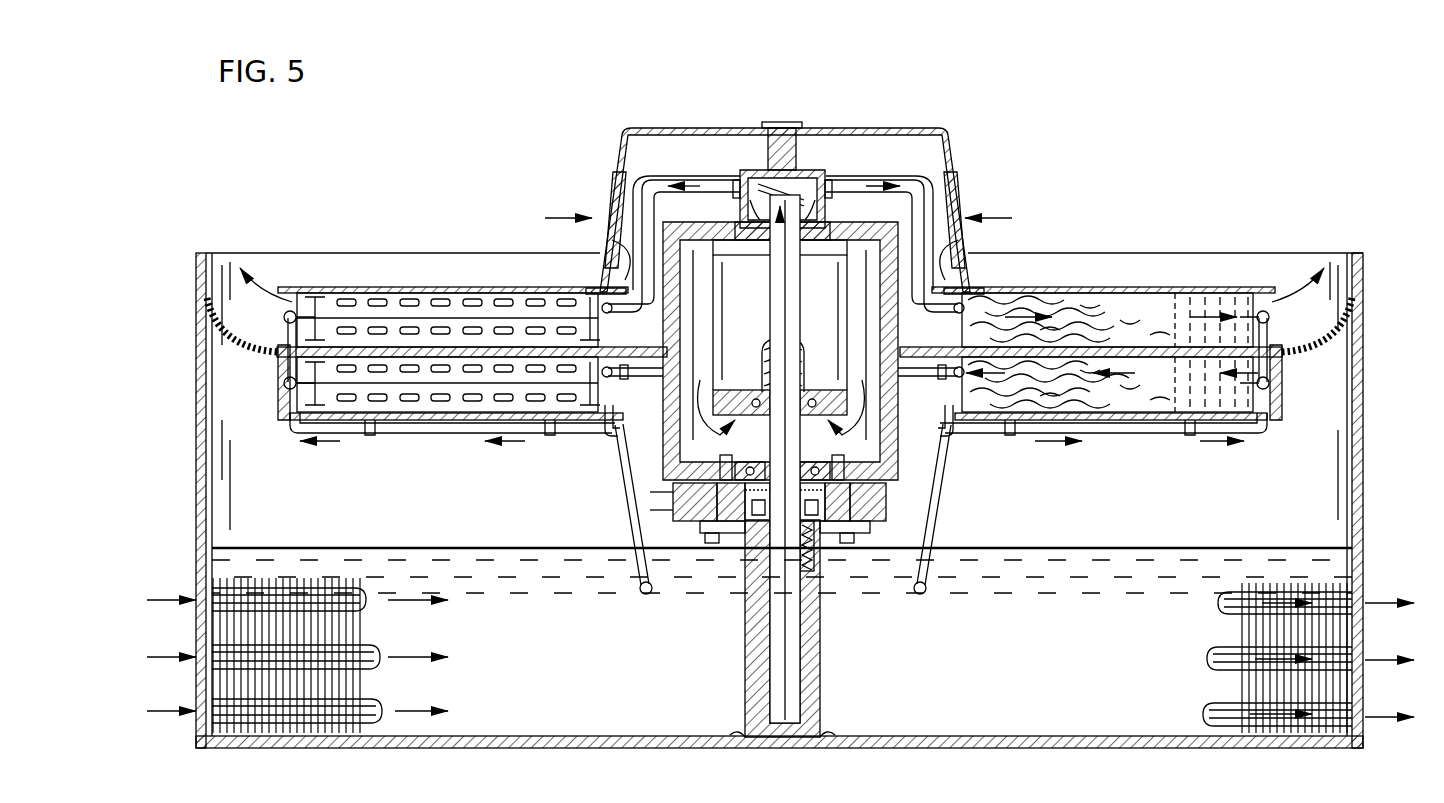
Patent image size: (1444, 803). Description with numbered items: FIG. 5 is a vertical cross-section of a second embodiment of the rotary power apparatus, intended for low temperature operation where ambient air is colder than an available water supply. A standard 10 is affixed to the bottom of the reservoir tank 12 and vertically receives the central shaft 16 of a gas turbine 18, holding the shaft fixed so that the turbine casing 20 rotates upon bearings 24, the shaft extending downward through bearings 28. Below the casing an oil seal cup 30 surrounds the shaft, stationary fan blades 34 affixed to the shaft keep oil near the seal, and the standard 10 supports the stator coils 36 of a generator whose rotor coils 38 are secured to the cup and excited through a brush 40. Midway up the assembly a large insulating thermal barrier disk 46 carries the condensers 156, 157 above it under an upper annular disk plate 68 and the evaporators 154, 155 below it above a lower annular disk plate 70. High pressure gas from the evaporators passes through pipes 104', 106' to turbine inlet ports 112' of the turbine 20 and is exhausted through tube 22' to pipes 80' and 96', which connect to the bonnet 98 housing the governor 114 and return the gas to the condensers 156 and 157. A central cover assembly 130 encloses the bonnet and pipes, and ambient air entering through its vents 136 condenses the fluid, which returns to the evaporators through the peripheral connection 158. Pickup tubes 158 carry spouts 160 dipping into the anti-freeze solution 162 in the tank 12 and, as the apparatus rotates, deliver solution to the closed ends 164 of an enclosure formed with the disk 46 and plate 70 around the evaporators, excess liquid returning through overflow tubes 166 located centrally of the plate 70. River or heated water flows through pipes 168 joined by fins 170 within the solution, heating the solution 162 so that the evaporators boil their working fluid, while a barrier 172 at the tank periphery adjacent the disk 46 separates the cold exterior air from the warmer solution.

The standard 10 is at (745, 680).
The reservoir tank 12 is at (1364, 418).
The central shaft 16 is at (786, 660).
The gas turbine 18 is at (762, 301).
The turbine casing 20 is at (714, 345).
The exhaust tube 22' is at (746, 146).
The bearings 24 is at (824, 410).
The bearings 28 is at (760, 464).
The oil seal cup 30 is at (718, 545).
The stationary fan blades 34 is at (748, 548).
The stator coils 36 is at (672, 545).
The rotor coils 38 is at (855, 545).
The brush 40 is at (814, 572).
The disk 46 is at (418, 346).
The upper annular disk plate 68 is at (470, 286).
The lower annular disk plate 70 is at (430, 422).
The pipe 80' is at (674, 227).
The pipe 96' is at (892, 227).
The bonnet 98 is at (752, 168).
The pipe 104' is at (635, 385).
The pipe 106' is at (955, 412).
The turbine inlet ports 112' is at (781, 389).
The governor 114 is at (812, 176).
The central cover assembly 130 is at (901, 127).
The vents 136 is at (612, 200).
The evaporator 154 is at (362, 380).
The evaporator 155 is at (1115, 418).
The condenser 156 is at (370, 320).
The condenser 157 is at (1100, 290).
The pickup tubes 158 is at (290, 332).
The spouts 160 is at (644, 594).
The solution 162 is at (1196, 546).
The closed ends 164 is at (278, 396).
The overflow tubes 166 is at (612, 440).
The pipes 168 is at (380, 648).
The fins 170 is at (222, 628).
The barrier 172 is at (232, 348).